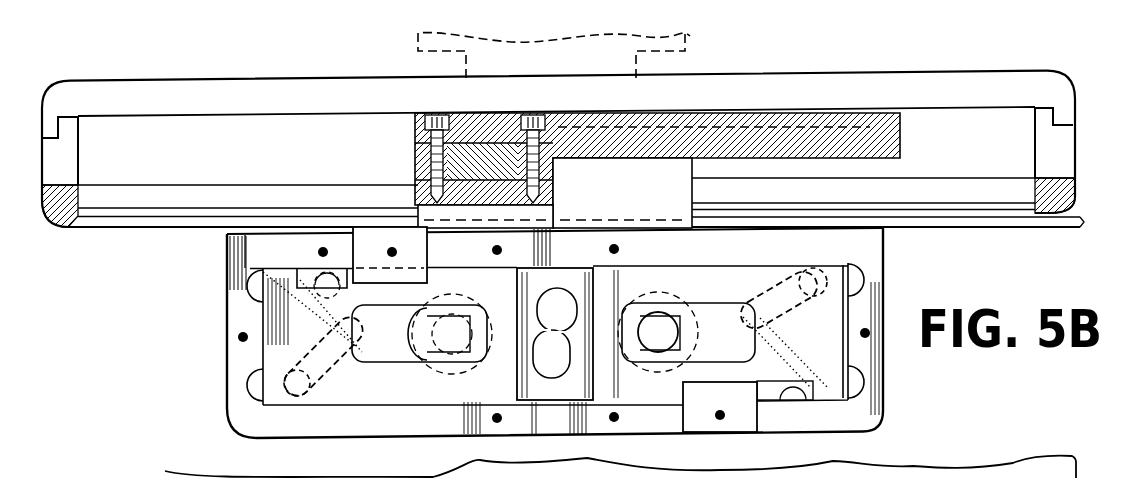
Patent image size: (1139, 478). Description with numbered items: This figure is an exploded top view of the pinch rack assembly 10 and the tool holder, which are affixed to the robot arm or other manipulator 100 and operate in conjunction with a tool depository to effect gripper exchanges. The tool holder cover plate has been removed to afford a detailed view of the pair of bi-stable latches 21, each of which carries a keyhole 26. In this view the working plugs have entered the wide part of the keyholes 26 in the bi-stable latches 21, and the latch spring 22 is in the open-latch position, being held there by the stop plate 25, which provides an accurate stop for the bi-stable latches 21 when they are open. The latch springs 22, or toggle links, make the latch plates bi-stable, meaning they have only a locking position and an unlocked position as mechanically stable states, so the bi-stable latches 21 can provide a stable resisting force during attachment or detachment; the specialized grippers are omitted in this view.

The pinch rack 10 is at (950, 72).
The robot arm 100 is at (690, 36).
The bi-stable latch 21 is at (760, 277).
The latch spring 22 is at (245, 268).
The stop plate 25 is at (780, 418).
The keyhole 26 is at (387, 388).